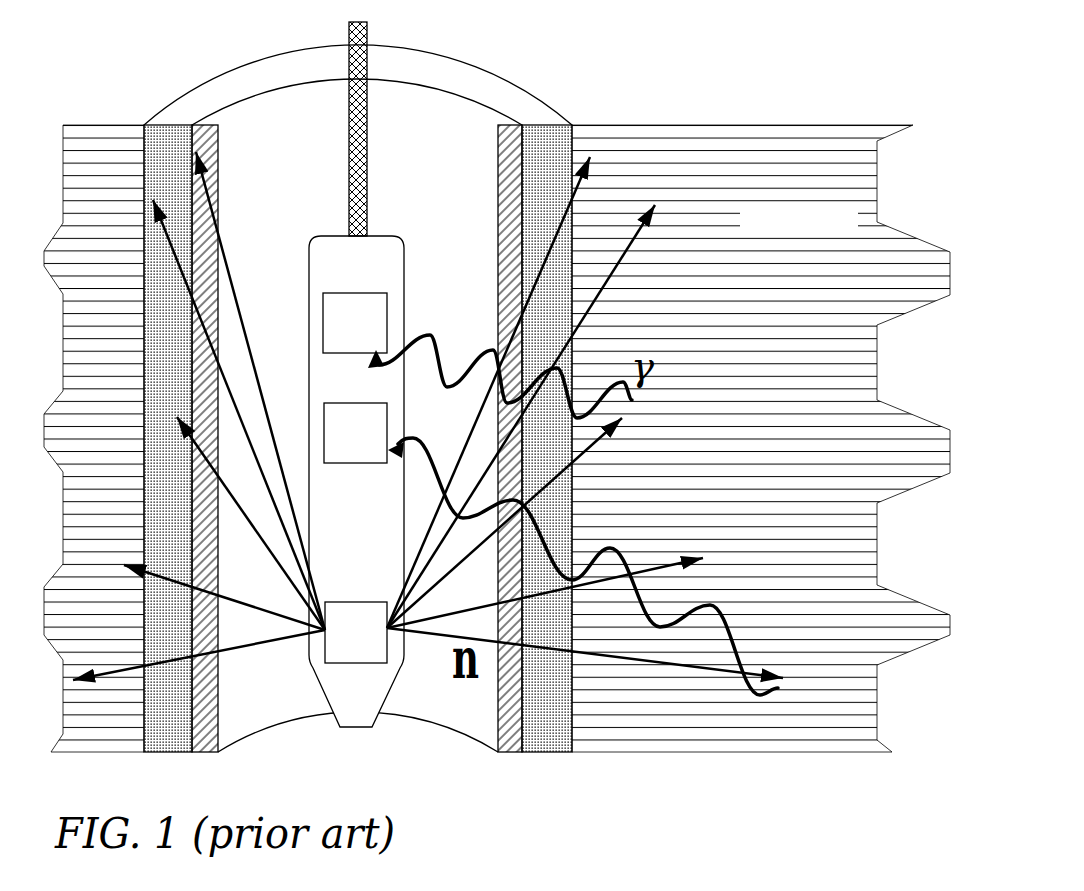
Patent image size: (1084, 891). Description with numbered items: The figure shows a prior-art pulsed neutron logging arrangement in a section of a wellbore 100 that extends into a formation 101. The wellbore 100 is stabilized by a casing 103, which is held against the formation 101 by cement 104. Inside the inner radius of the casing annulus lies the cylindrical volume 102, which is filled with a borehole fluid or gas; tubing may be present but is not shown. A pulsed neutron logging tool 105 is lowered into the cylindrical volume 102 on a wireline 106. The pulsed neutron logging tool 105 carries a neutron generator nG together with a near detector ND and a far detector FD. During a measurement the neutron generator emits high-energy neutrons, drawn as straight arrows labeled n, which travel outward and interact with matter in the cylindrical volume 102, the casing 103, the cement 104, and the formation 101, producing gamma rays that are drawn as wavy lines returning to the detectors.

The wellbore 100 is at (448, 62).
The formation 101 is at (497, 438).
The cylindrical volume 102 is at (310, 128).
The casing 103 is at (510, 752).
The cement 104 is at (548, 752).
The pulsed neutron logging tool 105 is at (375, 258).
The wireline 106 is at (355, 207).